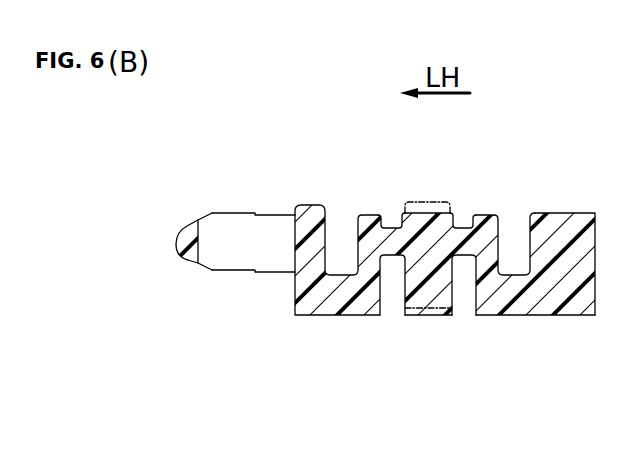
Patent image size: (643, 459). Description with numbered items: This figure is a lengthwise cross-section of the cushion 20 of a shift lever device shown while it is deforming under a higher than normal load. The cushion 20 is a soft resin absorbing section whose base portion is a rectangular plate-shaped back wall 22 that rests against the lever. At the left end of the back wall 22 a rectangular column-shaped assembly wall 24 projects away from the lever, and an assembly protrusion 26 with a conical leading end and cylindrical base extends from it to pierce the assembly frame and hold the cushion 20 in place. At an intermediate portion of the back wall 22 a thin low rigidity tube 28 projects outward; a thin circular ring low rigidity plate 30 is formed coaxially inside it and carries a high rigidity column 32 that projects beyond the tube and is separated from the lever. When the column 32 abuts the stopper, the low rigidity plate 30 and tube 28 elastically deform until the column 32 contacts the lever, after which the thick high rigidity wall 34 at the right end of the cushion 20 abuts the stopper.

The cushion 20 is at (336, 147).
The back wall 22 is at (352, 308).
The assembly wall 24 is at (303, 210).
The assembly protrusion 26 is at (222, 212).
The low rigidity tube 28 is at (479, 230).
The low rigidity plate 30 is at (395, 228).
The high rigidity column 32 is at (431, 310).
The high rigidity wall 34 is at (568, 282).